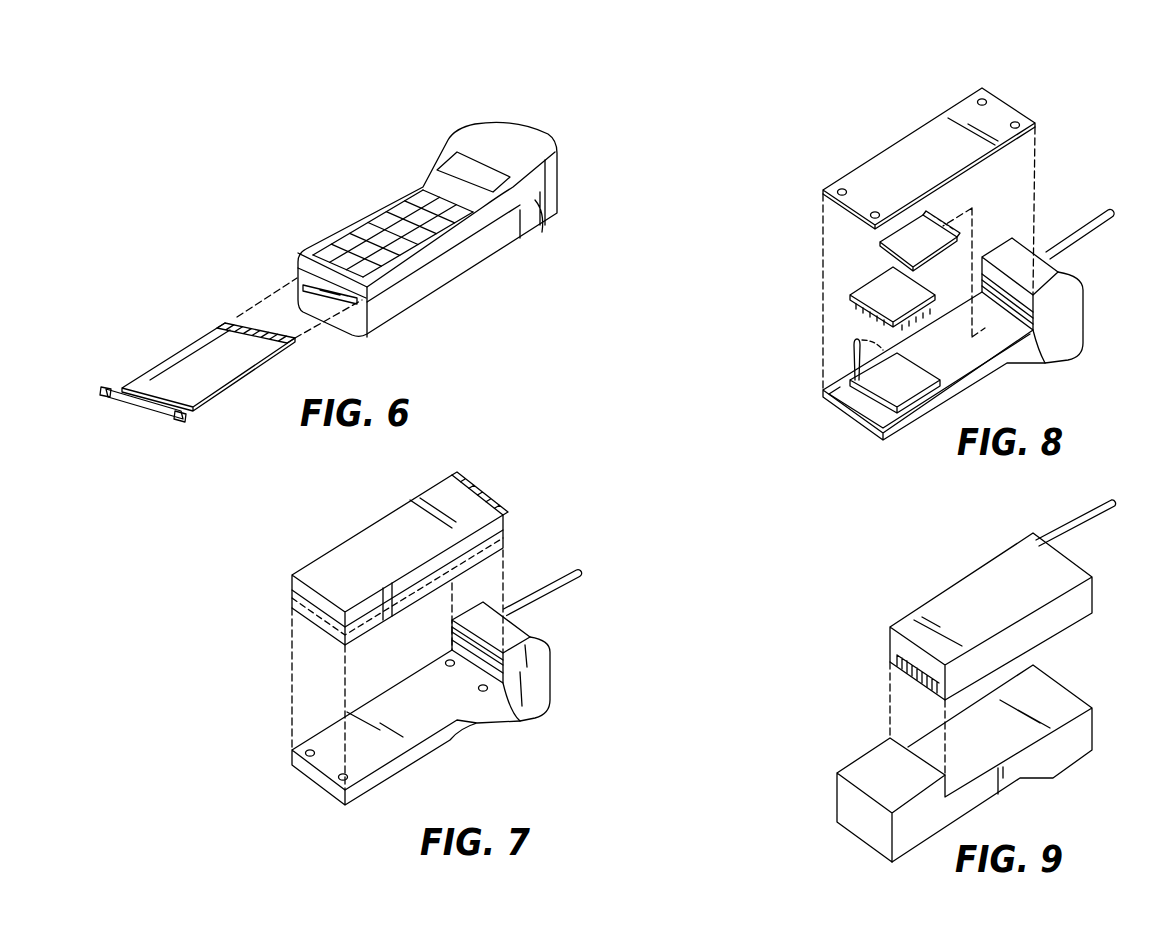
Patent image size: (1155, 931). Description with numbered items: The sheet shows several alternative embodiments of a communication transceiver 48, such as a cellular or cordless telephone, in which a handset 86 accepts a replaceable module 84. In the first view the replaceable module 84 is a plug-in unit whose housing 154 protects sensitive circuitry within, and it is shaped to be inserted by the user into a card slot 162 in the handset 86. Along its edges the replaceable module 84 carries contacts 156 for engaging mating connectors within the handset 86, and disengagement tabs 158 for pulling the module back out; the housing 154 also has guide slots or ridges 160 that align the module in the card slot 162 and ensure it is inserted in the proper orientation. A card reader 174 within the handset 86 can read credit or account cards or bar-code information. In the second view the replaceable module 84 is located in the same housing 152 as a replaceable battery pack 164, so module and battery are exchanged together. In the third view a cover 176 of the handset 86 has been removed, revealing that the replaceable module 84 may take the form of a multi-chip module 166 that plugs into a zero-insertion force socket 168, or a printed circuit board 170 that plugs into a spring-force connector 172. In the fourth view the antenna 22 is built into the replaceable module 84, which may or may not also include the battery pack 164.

In FIG. 9, the antenna 22 is at (1087, 512).
In FIG. 6, the transceiver 48 is at (416, 144).
In FIG. 7, the transceiver 48 is at (378, 802).
In FIG. 6, the replaceable module 84 is at (155, 365).
In FIG. 7, the replaceable module 84 is at (298, 607).
In FIG. 9, the replaceable module 84 is at (948, 608).
In FIG. 6, the handset 86 is at (377, 203).
In FIG. 7, the handset 86 is at (443, 747).
In FIG. 8, the handset 86 is at (1083, 318).
In FIG. 9, the handset 86 is at (980, 810).
In FIG. 7, the housing 152 is at (333, 557).
In FIG. 6, the housing 154 is at (203, 347).
In FIG. 6, the contacts 156 is at (237, 317).
In FIG. 6, the disengagement tabs 158 is at (103, 392).
In FIG. 6, the guide slots or ridges 160 is at (147, 407).
In FIG. 6, the card slot 162 is at (307, 289).
In FIG. 7, the replaceable battery pack 164 is at (298, 588).
In FIG. 8, the multi-chip module 166 is at (908, 305).
In FIG. 8, the zero-insertion force socket 168 is at (908, 391).
In FIG. 8, the printed circuit board 170 is at (931, 252).
In FIG. 7, the spring-force connector 172 is at (477, 650).
In FIG. 8, the spring-force connector 172 is at (997, 333).
In FIG. 6, the card reader 174 is at (525, 237).
In FIG. 8, the cover 176 is at (940, 174).